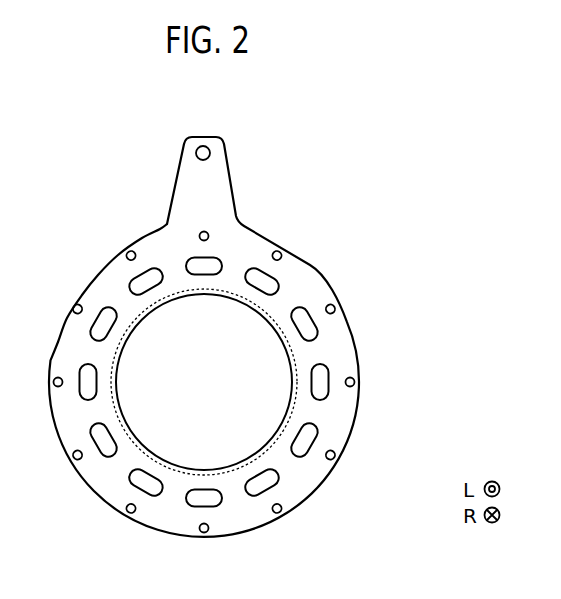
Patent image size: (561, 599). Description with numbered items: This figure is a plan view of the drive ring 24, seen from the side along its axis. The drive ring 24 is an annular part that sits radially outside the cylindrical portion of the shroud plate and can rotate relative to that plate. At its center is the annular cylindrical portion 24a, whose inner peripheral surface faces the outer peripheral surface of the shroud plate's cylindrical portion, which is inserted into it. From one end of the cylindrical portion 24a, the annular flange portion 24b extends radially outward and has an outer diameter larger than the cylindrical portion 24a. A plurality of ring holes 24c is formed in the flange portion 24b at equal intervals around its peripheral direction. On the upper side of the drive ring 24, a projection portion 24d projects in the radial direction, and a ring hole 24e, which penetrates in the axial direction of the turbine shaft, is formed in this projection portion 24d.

The drive ring 24 is at (321, 268).
The cylindrical portion 24a is at (294, 357).
The flange portion 24b is at (127, 300).
The holes 24c is at (276, 512).
The projection portion 24d is at (226, 149).
The hole 24e is at (197, 153).